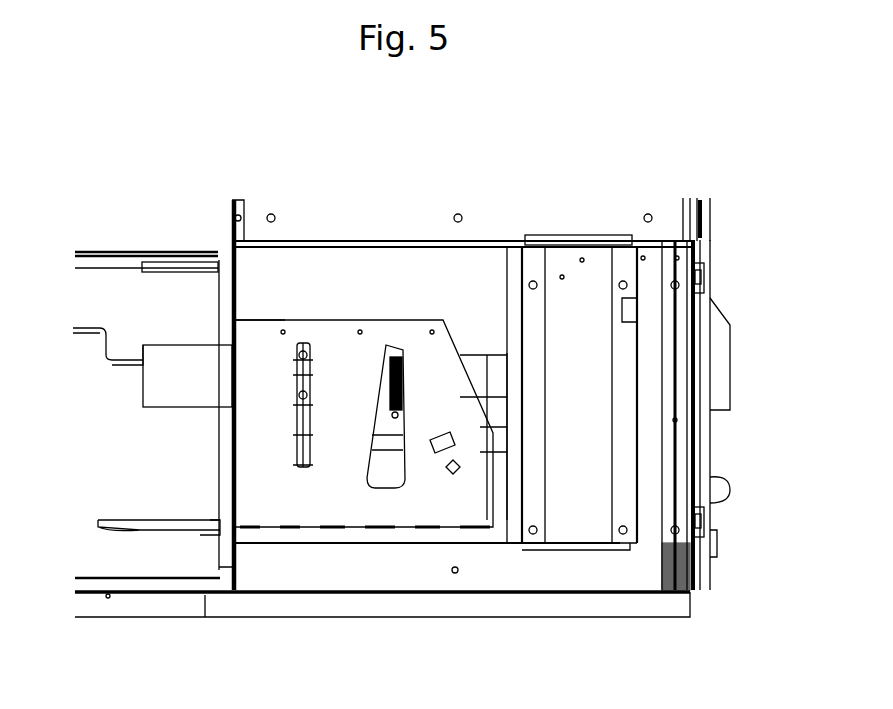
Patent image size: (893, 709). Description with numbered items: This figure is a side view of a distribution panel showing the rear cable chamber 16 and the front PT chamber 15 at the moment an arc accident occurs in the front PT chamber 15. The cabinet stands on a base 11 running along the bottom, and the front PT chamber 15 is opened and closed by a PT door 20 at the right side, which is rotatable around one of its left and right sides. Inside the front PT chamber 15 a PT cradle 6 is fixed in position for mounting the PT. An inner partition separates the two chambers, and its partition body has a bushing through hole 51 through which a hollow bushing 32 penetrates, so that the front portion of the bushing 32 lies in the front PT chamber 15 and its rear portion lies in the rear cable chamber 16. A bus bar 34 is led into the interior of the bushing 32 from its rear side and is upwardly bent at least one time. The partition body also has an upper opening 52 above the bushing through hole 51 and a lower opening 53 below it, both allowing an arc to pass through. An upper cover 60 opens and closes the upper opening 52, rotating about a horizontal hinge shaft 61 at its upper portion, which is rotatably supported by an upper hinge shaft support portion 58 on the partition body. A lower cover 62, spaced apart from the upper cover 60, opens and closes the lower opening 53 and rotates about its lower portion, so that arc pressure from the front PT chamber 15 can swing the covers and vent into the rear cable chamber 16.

The PT cradle 6 is at (428, 480).
The base 11 is at (125, 617).
The front PT chamber 15 is at (478, 276).
The rear cable chamber 16 is at (172, 464).
The PT door 20 is at (700, 452).
The bushing 32 is at (153, 382).
The bus bar 34 is at (103, 340).
The bushing through hole 51 is at (226, 345).
The upper opening 52 is at (222, 300).
The lower opening 53 is at (222, 482).
The upper hinge shaft support portion 58 is at (258, 240).
The upper cover 60 is at (155, 266).
The horizontal hinge shaft 61 is at (192, 254).
The lower cover 62 is at (143, 528).